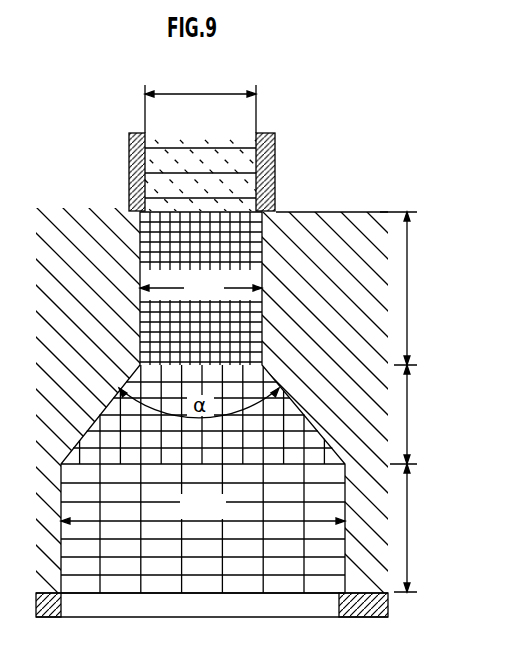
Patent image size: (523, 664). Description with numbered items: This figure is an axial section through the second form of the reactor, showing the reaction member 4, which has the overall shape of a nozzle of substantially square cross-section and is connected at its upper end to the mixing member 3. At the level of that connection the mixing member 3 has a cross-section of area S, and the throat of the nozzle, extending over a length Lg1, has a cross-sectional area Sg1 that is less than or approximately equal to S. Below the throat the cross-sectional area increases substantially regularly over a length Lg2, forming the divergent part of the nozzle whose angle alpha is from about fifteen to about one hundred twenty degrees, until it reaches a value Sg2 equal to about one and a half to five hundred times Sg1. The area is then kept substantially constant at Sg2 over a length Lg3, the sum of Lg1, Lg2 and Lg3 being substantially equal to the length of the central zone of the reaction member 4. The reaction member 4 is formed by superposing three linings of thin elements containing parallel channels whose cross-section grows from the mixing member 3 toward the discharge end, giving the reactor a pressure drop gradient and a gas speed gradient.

The mixing member 3 is at (260, 126).
The reaction member 4 is at (278, 340).
The cross-sectional area of the mixing member S is at (200, 101).
The cross-sectional area of the nozzle throat Sg1 is at (201, 279).
The cross-sectional area of the nozzle after divergence Sg2 is at (203, 509).
The length of the nozzle throat Lg1 is at (413, 288).
The length of the divergent part of the nozzle Lg2 is at (418, 414).
The length of the constant-section part of the nozzle Lg3 is at (420, 528).